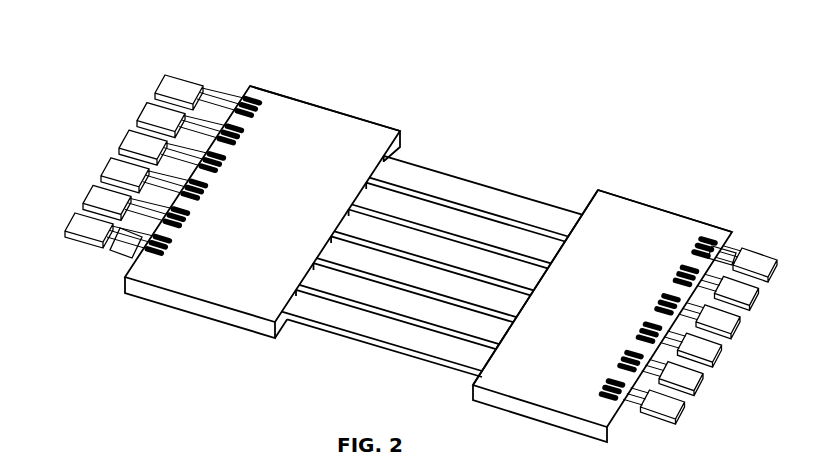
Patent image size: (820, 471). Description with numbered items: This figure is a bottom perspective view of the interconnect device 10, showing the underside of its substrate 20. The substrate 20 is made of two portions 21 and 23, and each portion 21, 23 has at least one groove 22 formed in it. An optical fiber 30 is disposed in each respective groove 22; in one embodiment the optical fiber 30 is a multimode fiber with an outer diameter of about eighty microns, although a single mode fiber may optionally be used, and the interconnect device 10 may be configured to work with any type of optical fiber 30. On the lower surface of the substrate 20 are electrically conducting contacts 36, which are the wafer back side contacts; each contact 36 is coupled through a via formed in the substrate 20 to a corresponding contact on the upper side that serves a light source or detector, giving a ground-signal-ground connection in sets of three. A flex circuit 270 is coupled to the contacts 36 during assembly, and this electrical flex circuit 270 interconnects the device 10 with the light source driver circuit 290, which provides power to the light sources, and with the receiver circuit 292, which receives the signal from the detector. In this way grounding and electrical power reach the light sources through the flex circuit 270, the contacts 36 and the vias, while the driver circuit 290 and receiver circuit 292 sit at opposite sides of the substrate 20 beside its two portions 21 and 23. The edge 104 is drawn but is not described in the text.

The interconnect device 10 is at (391, 101).
The substrate 20 is at (630, 210).
The first portion of substrate 21 is at (340, 126).
The groove 22 is at (378, 128).
The second portion of substrate 23 is at (657, 210).
The optical fiber 30 is at (420, 233).
The back side electrically conducting contacts 36 is at (254, 115).
The edge of second substrate 104 is at (567, 217).
The flex circuit 270 is at (727, 250).
The light source driver circuit 290 is at (176, 82).
The receiver circuit 292 is at (760, 257).